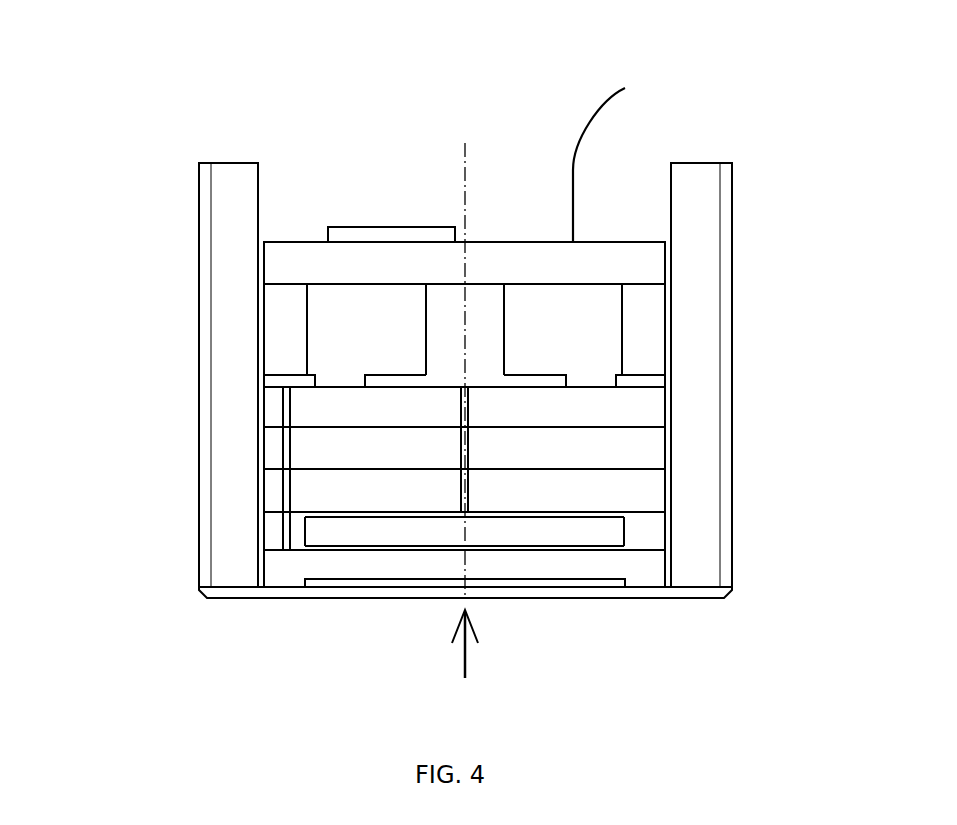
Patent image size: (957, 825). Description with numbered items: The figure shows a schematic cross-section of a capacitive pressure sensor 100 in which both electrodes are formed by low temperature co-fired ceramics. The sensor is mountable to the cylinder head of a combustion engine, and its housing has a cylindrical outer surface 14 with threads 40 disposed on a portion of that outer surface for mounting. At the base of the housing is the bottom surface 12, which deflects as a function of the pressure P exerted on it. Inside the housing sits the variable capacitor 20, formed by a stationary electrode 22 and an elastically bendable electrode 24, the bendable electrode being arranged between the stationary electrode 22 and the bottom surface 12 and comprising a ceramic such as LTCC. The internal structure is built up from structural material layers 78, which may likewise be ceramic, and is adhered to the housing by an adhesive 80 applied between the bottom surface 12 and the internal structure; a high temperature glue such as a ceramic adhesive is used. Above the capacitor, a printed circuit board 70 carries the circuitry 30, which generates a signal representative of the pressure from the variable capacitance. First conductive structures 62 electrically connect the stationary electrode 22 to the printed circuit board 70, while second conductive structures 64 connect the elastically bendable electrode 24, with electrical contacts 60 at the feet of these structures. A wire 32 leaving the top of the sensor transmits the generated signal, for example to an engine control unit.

The capacitive pressure sensor 100 is at (404, 199).
The outer surface 14 is at (199, 292).
The threads 40 is at (211, 506).
The bottom surface 12 is at (507, 598).
The wire 32 is at (580, 131).
The circuitry 30 is at (328, 233).
The printed circuit board 70 is at (389, 275).
The second conductive structure 64 is at (298, 340).
The first conductive structure 62 is at (463, 340).
The electrical contacts 60 is at (270, 378).
The structural material layer 78 is at (392, 417).
The variable capacitor 20 is at (505, 543).
The stationary electrode 22 is at (545, 518).
The elastically bendable electrode 24 is at (436, 547).
The adhesive 80 is at (350, 583).
The pressure P is at (465, 655).